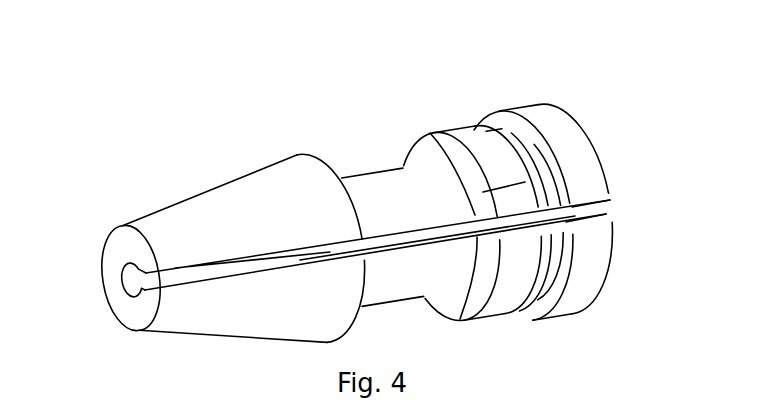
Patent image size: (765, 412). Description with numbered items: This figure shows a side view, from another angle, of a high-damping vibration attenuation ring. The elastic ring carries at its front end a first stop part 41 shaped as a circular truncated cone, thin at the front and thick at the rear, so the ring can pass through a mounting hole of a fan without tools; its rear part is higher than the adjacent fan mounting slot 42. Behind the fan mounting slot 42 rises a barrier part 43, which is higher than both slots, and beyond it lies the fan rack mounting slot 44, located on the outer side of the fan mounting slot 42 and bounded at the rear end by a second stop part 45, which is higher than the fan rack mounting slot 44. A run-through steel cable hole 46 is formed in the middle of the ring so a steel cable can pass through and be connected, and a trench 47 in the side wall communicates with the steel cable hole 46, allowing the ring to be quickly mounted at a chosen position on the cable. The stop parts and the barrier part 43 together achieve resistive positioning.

The first stop part 41 is at (208, 205).
The fan mounting slot 42 is at (375, 186).
The barrier part 43 is at (471, 140).
The fan rack mounting slot 44 is at (530, 178).
The second stop part 45 is at (578, 157).
The steel cable hole 46 is at (130, 277).
The trench 47 is at (590, 212).